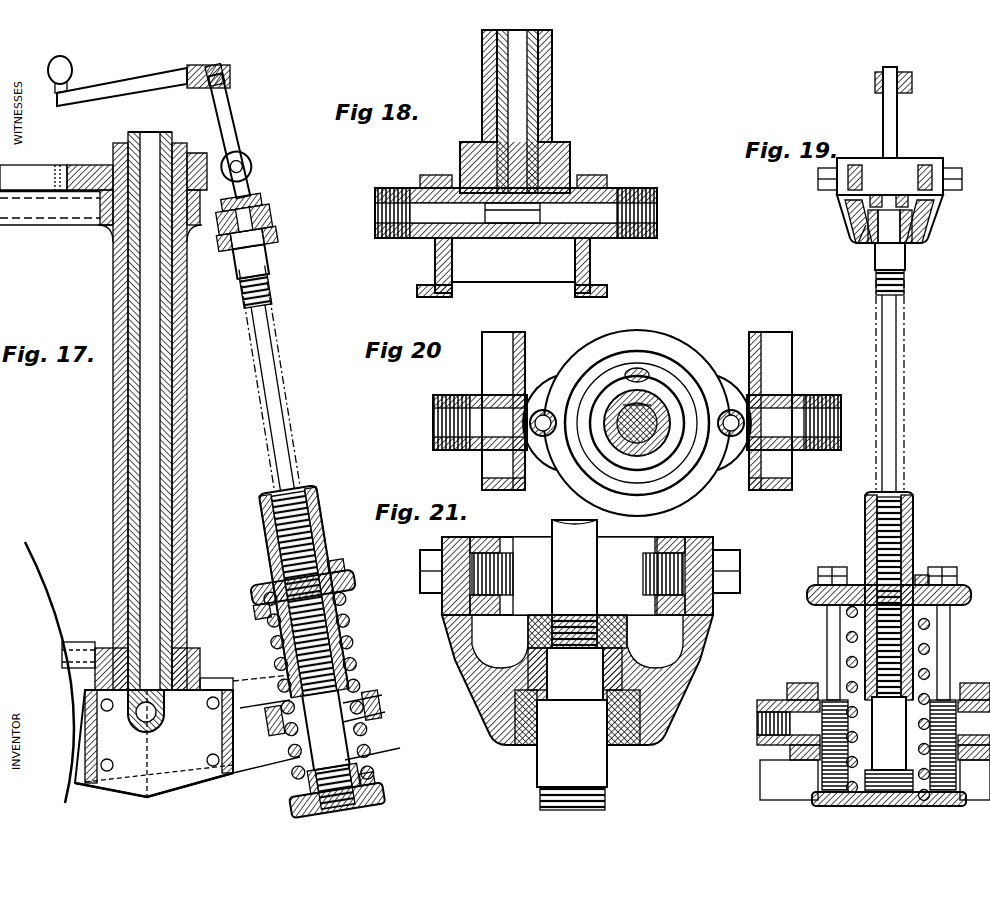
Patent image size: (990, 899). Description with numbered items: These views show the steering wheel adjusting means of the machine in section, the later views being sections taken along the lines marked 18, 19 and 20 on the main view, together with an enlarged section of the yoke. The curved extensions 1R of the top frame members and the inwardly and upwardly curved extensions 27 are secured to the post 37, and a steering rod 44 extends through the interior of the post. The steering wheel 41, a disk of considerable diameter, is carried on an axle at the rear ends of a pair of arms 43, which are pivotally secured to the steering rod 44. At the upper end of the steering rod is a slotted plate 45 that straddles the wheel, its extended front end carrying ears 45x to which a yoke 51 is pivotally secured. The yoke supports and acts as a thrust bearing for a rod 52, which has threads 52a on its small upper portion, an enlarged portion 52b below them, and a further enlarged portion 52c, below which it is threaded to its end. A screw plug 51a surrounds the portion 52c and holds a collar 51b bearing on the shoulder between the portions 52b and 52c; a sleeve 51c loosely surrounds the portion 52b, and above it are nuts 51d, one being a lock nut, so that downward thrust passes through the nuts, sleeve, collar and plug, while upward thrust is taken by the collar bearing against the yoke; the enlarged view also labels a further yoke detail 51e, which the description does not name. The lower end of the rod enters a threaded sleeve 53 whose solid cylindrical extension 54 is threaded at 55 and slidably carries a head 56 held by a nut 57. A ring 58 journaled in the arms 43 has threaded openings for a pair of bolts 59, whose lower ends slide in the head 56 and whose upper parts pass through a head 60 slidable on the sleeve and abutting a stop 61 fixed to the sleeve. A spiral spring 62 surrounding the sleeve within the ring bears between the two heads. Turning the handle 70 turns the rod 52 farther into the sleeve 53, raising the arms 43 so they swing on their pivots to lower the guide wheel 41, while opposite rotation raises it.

In FIG. 17, the frame member extension 1R is at (40, 222).
In FIG. 17, the section line 18— 18 is at (178, 648).
In FIG. 17, the section line 19— 19 is at (222, 112).
In FIG. 17, the section line 20— 20 is at (287, 692).
In FIG. 17, the extension 27 is at (62, 648).
In FIG. 17, the post 37 is at (180, 462).
In FIG. 18, the post 37 is at (542, 105).
In FIG. 17, the steering wheel 41 is at (38, 595).
In FIG. 17, the arms 43 is at (245, 680).
In FIG. 18, the arms 43 is at (432, 176).
In FIG. 20, the arms 43 is at (490, 376).
In FIG. 19, the arms 43 is at (795, 684).
In FIG. 17, the steering rod 44 is at (160, 486).
In FIG. 18, the steering rod 44 is at (520, 127).
In FIG. 17, the plate 45 is at (104, 162).
In FIG. 21, the plate 45 is at (522, 547).
In FIG. 19, the plate 45 is at (906, 165).
In FIG. 21, the ears 45x is at (480, 545).
In FIG. 19, the ears 45x is at (856, 163).
In FIG. 21, the yoke 51 is at (462, 655).
In FIG. 19, the yoke 51 is at (848, 212).
In FIG. 21, the screw plug 51a is at (628, 740).
In FIG. 19, the screw plug 51a is at (868, 246).
In FIG. 17, the collar 51b is at (264, 228).
In FIG. 21, the collar 51b is at (610, 700).
In FIG. 19, the collar 51b is at (912, 245).
In FIG. 21, the sleeve 51c is at (530, 648).
In FIG. 21, the nuts 51d is at (535, 612).
In FIG. 21, the threaded bore 51e is at (600, 614).
In FIG. 17, the rod 52 is at (215, 121).
In FIG. 19, the rod 52 is at (905, 408).
In FIG. 17, the threads 52a is at (248, 197).
In FIG. 19, the threads 52a is at (943, 196).
In FIG. 17, the enlarged rod portion 52b is at (256, 210).
In FIG. 21, the enlarged rod portion 52b is at (575, 674).
In FIG. 19, the enlarged rod portion 52b is at (912, 230).
In FIG. 17, the further enlarged rod portion 52c is at (255, 258).
In FIG. 21, the further enlarged rod portion 52c is at (538, 777).
In FIG. 19, the further enlarged rod portion 52c is at (906, 275).
In FIG. 17, the threaded sleeve 53 is at (315, 560).
In FIG. 20, the threaded sleeve 53 is at (650, 345).
In FIG. 19, the threaded sleeve 53 is at (910, 540).
In FIG. 17, the solid cylindrical extension 54 is at (342, 748).
In FIG. 20, the solid cylindrical extension 54 is at (648, 412).
In FIG. 19, the solid cylindrical extension 54 is at (872, 745).
In FIG. 17, the threaded portion 55 is at (305, 788).
In FIG. 19, the threaded portion 55 is at (866, 785).
In FIG. 17, the head 56 is at (368, 795).
In FIG. 17, the nut 57 is at (375, 803).
In FIG. 19, the nut 57 is at (812, 800).
In FIG. 17, the ring 58 is at (377, 708).
In FIG. 19, the ring 58 is at (790, 750).
In FIG. 20, the bolts 59 is at (548, 437).
In FIG. 19, the bolts 59 is at (827, 618).
In FIG. 17, the head 60 is at (338, 590).
In FIG. 19, the head 60 is at (812, 592).
In FIG. 17, the stop 61 is at (327, 580).
In FIG. 19, the stop 61 is at (918, 572).
In FIG. 17, the spiral spring 62 is at (332, 625).
In FIG. 20, the spiral spring 62 is at (655, 383).
In FIG. 19, the spiral spring 62 is at (930, 650).
In FIG. 17, the handle 70 is at (88, 100).